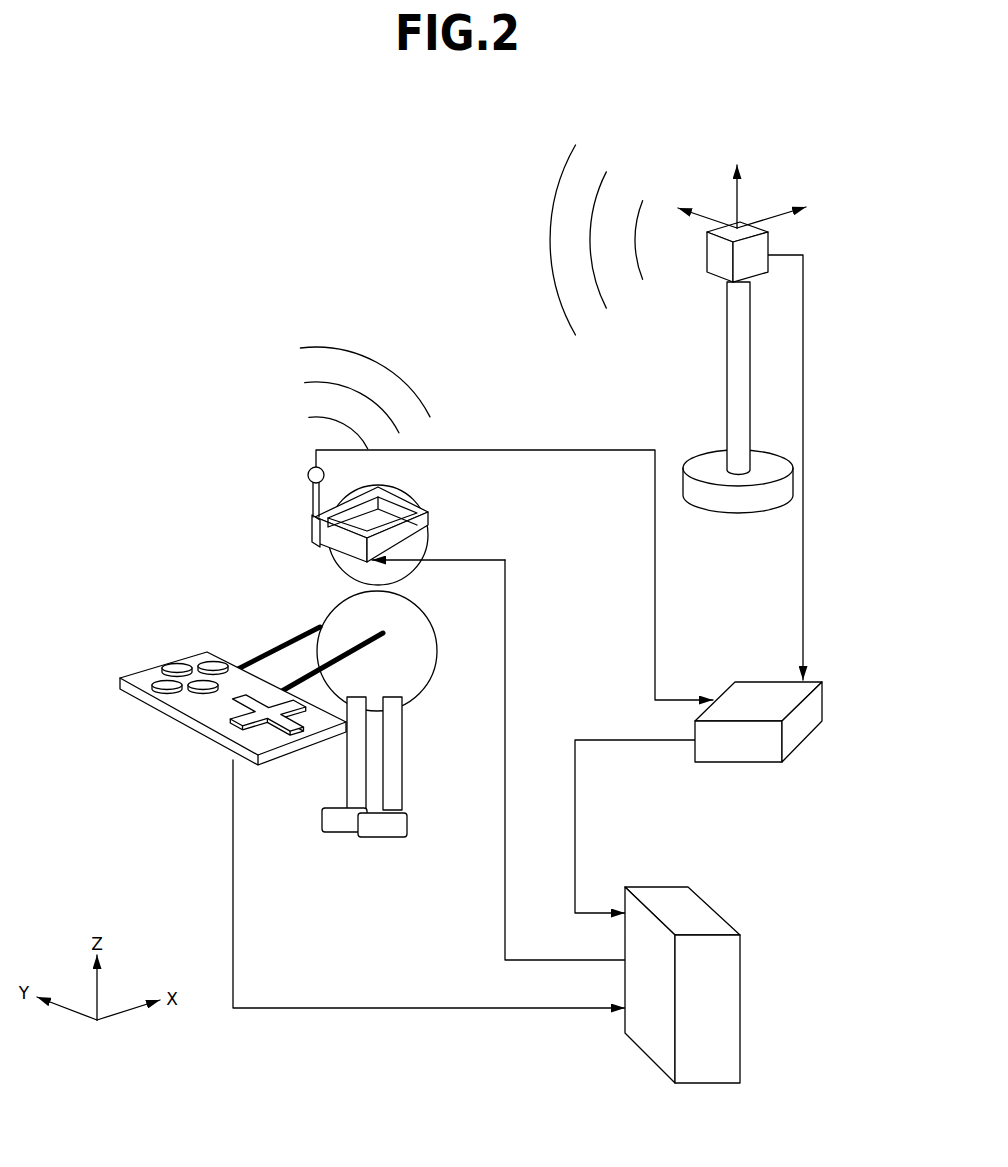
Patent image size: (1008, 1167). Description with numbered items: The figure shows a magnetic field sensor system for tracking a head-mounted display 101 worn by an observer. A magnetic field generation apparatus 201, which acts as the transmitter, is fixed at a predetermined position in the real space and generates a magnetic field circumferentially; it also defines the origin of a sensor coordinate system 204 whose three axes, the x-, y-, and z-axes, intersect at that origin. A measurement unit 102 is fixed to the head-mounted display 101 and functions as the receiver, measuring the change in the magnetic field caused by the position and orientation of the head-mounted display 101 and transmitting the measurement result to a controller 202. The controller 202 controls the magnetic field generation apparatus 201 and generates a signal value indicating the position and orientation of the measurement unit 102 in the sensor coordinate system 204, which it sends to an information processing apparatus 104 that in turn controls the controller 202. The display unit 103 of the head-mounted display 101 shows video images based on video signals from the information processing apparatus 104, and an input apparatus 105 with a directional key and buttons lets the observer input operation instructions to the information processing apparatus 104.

The head-mounted display 101 is at (432, 518).
The measurement unit 102 is at (307, 476).
The display unit 103 is at (311, 532).
The information processing apparatus 104 is at (695, 910).
The input apparatus 105 is at (145, 680).
The magnetic field generation apparatus 201 is at (722, 268).
The controller 202 is at (822, 700).
The sensor coordinate system 204 is at (742, 198).